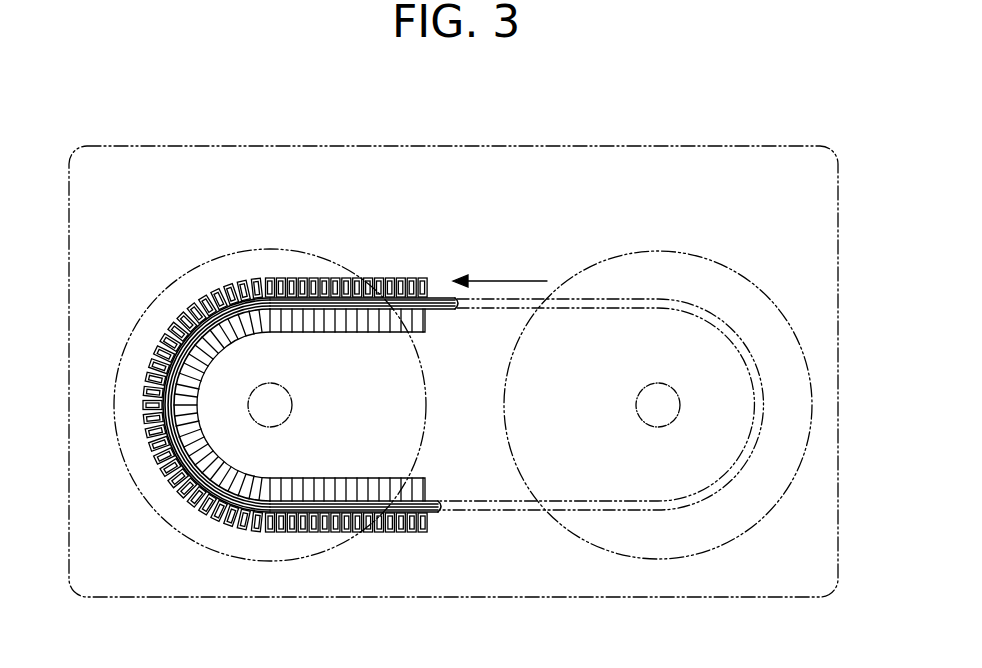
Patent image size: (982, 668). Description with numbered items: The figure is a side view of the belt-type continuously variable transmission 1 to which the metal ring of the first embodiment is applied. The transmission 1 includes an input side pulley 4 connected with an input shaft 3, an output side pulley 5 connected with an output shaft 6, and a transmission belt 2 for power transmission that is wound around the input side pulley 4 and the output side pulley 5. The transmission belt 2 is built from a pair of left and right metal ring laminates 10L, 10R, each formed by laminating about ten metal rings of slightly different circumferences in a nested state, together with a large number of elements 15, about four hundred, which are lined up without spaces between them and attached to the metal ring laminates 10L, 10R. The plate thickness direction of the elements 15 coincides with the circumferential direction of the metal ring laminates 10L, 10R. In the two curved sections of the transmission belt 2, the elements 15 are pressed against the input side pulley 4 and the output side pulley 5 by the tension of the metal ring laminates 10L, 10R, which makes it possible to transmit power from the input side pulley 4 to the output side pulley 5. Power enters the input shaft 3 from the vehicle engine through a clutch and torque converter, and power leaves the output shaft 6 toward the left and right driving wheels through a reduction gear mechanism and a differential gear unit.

The belt-type continuously variable transmission 1 is at (445, 146).
The transmission belt 2 is at (453, 355).
The input shaft 3 is at (678, 398).
The input side pulley 4 is at (661, 251).
The output side pulley 5 is at (272, 248).
The output shaft 6 is at (292, 401).
The elements 15 is at (385, 277).
The left metal ring laminate 10L is at (336, 358).
The right metal ring laminate 10R is at (497, 215).